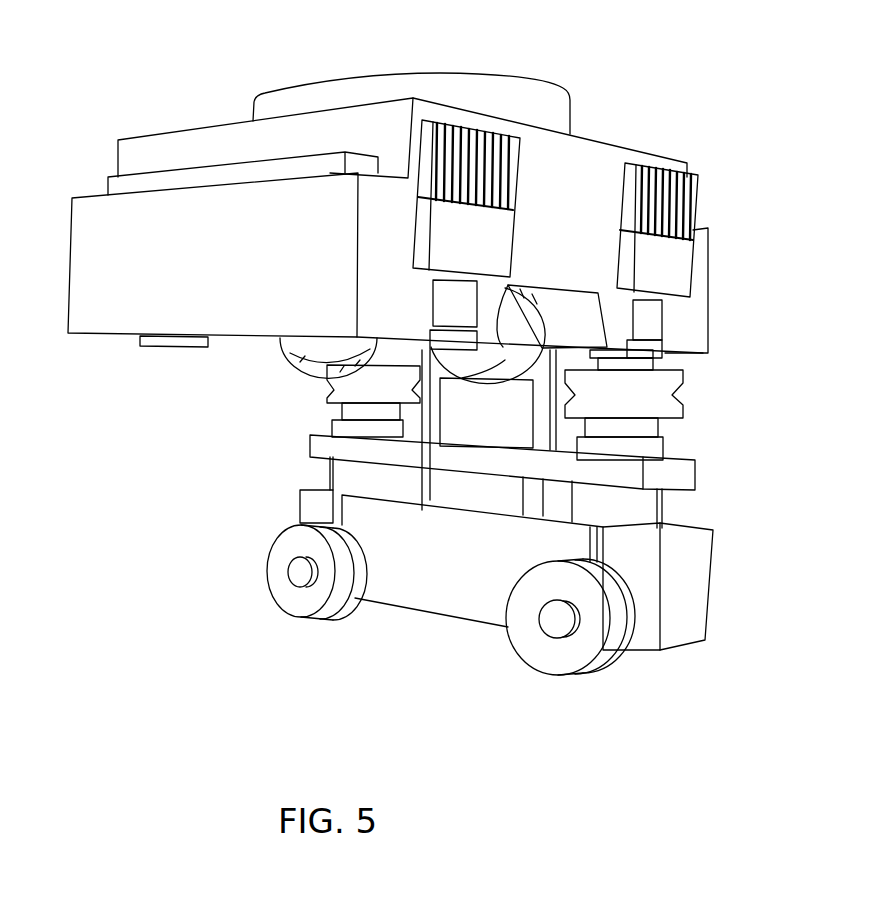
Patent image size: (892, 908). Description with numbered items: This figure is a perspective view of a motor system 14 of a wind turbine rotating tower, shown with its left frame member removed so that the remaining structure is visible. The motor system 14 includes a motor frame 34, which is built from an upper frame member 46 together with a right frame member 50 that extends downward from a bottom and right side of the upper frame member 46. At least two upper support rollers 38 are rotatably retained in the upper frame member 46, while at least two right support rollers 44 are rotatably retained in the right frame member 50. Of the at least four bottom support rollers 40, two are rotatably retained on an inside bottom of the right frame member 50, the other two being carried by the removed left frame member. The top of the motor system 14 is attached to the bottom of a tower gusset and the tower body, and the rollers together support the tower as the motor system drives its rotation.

The motor system 14 is at (648, 53).
The motor frame 34 is at (218, 105).
The upper support rollers 38 is at (293, 350).
The bottom support rollers 40 is at (297, 603).
The right support rollers 44 is at (327, 395).
The upper frame member 46 is at (103, 315).
The right frame member 50 is at (445, 602).